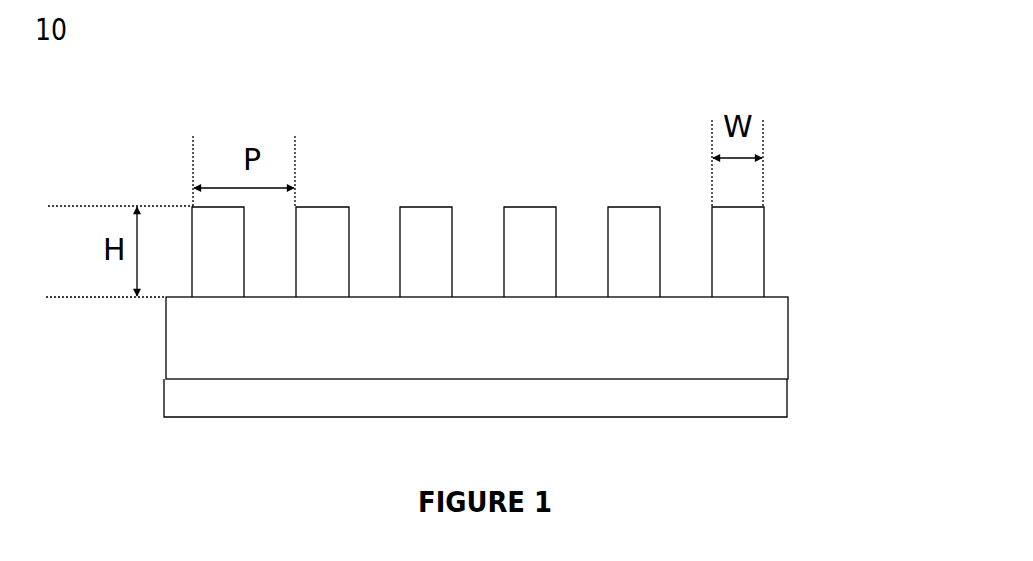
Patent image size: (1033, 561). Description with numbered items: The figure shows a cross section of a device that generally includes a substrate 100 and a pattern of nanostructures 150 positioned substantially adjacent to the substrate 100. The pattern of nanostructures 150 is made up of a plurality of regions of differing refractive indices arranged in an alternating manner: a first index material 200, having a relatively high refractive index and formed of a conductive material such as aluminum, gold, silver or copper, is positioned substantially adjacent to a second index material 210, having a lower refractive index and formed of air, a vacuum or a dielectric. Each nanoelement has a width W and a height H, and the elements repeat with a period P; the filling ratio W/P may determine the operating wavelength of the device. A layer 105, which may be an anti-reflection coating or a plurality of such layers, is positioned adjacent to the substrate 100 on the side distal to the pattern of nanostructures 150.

The substrate 100 is at (477, 338).
The layer 105 is at (475, 398).
The pattern of nanostructures 150 is at (567, 193).
The first index material 200 is at (432, 205).
The second index material 210 is at (583, 208).